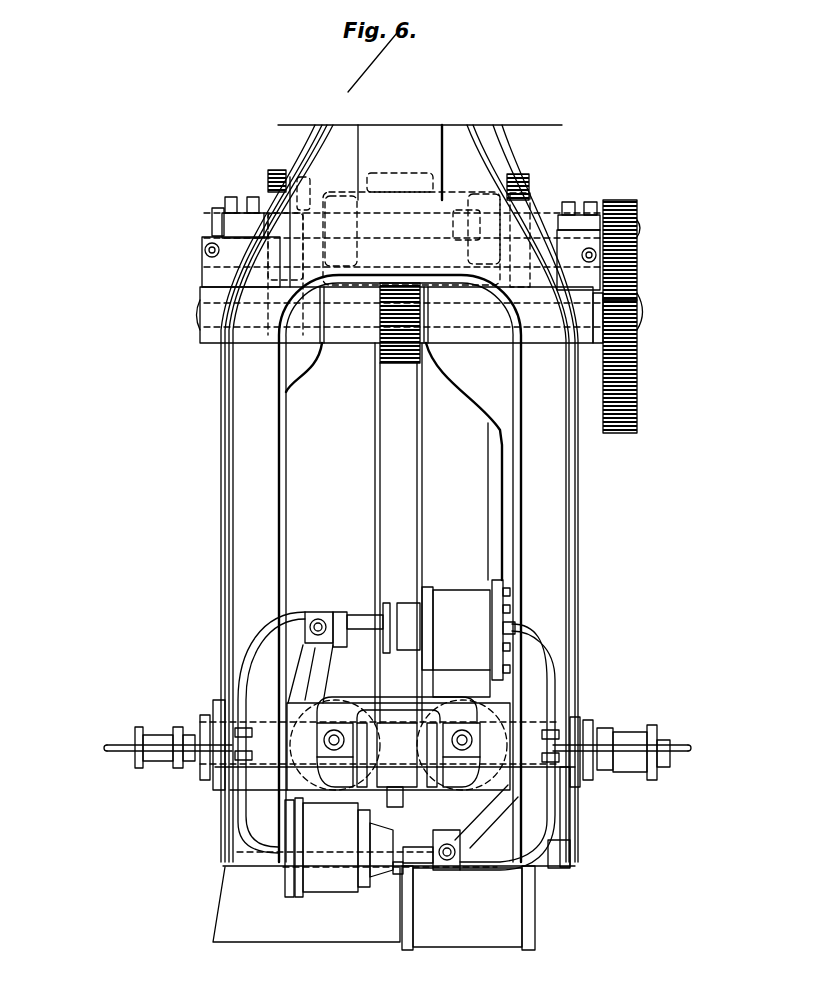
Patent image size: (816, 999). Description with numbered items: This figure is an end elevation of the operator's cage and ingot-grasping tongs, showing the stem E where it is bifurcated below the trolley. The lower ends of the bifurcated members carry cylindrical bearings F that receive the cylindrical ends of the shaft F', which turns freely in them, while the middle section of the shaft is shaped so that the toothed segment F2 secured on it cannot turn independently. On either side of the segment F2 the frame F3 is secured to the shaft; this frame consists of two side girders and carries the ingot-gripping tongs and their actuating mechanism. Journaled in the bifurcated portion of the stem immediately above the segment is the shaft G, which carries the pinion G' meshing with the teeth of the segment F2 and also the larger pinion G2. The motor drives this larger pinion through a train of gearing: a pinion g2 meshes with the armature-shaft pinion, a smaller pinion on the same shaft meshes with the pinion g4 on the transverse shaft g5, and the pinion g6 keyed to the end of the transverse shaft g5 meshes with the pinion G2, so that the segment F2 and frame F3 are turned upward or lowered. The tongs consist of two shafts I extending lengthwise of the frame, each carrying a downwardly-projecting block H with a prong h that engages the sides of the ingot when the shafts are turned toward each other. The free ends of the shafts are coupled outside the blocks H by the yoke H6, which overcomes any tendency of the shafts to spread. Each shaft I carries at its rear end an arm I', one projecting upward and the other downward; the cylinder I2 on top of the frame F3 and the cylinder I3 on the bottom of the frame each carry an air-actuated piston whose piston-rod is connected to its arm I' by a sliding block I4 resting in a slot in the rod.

The stem E is at (432, 133).
The pinion g2 is at (268, 174).
The pinion g4 is at (530, 190).
The transverse shaft g5 is at (380, 240).
The pinion g6 is at (637, 207).
The shaft G is at (399, 287).
The pinion G' is at (371, 345).
The larger pinion G2 is at (632, 363).
The bearings F is at (408, 825).
The shaft F' is at (596, 734).
The segment F2 is at (412, 440).
The frame F3 is at (297, 740).
The prong h is at (352, 793).
The block H is at (398, 745).
The yoke H6 is at (397, 711).
The shafts I is at (398, 765).
The arm I' is at (401, 746).
The cylinder I2 is at (431, 638).
The cylinder I3 is at (336, 882).
The sliding block I4 is at (307, 612).